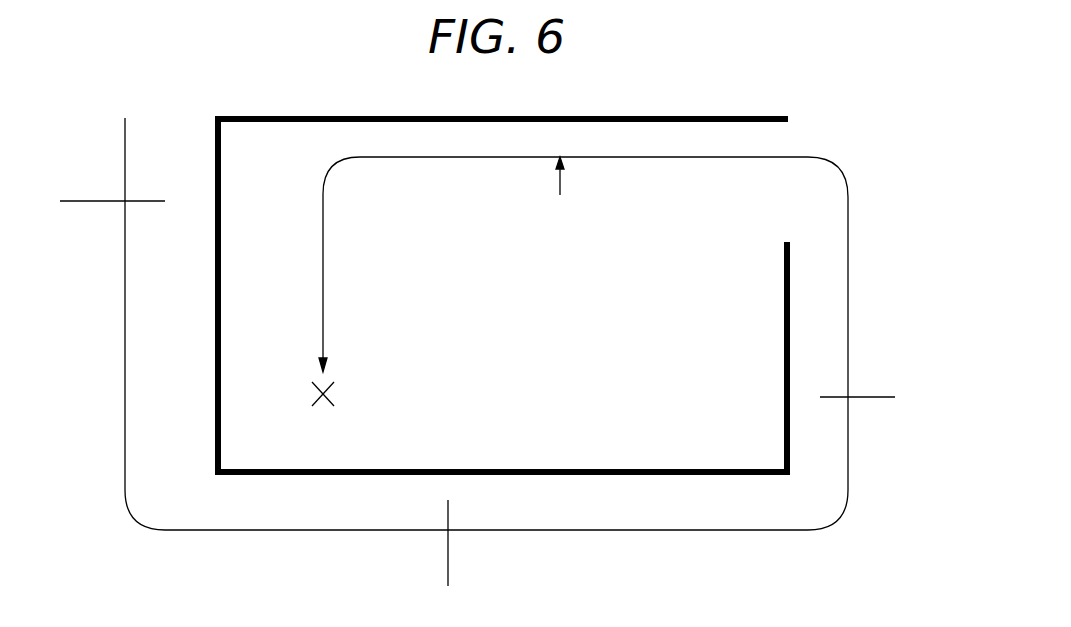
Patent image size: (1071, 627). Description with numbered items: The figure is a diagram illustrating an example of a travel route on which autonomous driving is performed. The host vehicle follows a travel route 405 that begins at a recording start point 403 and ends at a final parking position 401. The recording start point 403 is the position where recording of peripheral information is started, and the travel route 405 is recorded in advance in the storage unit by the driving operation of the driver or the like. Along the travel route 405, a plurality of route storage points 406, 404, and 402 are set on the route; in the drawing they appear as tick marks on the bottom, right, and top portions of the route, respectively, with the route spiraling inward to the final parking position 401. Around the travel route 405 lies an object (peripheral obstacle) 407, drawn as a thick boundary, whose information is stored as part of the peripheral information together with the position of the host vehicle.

The final parking position 401 is at (328, 386).
The route storage point 402 is at (557, 159).
The recording start point 403 is at (124, 203).
The route storage point 404 is at (848, 397).
The travel route 405 is at (836, 168).
The route storage point 406 is at (450, 530).
The object (peripheral obstacle) 407 is at (618, 469).